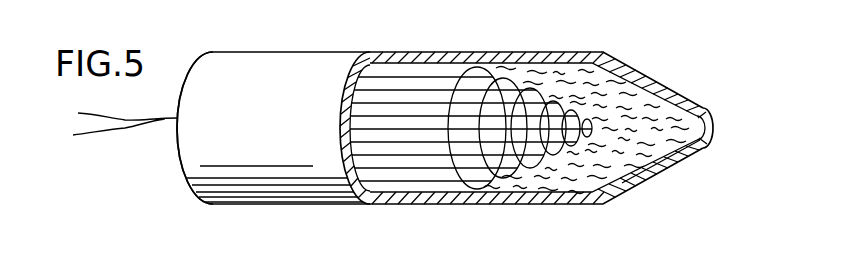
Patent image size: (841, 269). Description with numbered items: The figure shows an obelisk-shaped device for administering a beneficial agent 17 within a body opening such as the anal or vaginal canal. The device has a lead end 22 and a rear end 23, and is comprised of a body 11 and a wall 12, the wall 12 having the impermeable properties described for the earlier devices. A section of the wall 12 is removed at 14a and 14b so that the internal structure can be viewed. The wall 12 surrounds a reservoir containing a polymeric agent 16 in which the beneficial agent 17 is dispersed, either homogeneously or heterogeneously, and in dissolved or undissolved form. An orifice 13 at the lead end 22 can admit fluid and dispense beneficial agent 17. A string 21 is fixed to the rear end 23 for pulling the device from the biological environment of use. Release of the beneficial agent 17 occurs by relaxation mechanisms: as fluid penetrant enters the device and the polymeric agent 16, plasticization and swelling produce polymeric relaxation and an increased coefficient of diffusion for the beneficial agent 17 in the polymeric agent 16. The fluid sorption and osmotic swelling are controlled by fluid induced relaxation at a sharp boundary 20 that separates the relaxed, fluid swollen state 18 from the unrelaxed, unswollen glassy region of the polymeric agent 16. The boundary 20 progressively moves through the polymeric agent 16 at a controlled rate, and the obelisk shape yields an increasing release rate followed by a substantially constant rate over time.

The body 11 is at (560, 51).
The wall 12 is at (429, 196).
The orifice 13 is at (705, 120).
The removed wall section 14a is at (381, 60).
The removed wall section 14b is at (374, 196).
The polymeric agent 16 is at (458, 190).
The beneficial agent 17 is at (441, 97).
The fluid swollen state 18 is at (612, 180).
The boundary 20 is at (524, 170).
The string 21 is at (125, 133).
The lead end 22 is at (684, 158).
The rear end 23 is at (181, 166).